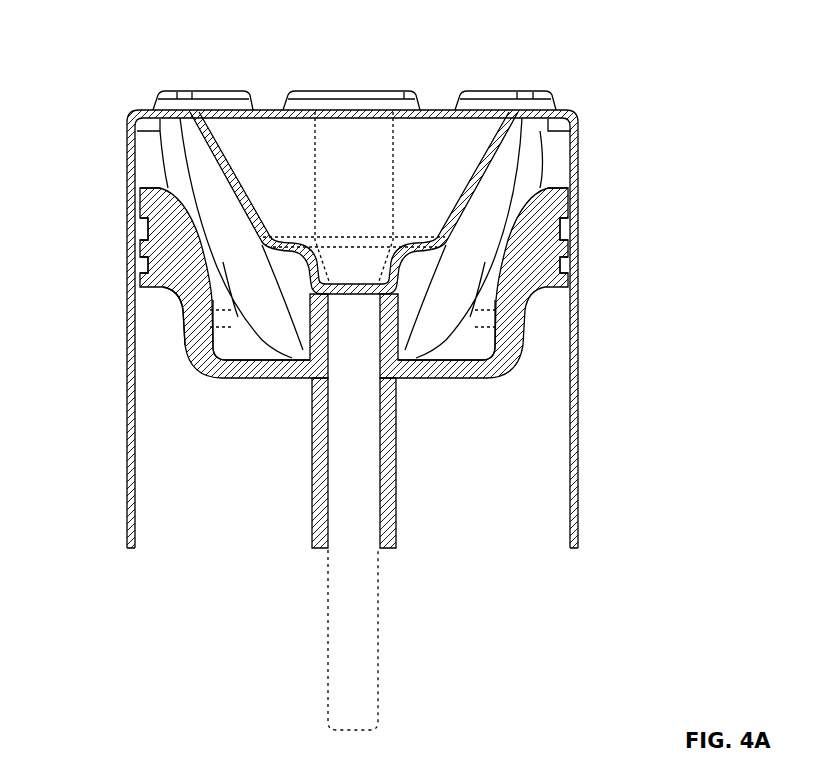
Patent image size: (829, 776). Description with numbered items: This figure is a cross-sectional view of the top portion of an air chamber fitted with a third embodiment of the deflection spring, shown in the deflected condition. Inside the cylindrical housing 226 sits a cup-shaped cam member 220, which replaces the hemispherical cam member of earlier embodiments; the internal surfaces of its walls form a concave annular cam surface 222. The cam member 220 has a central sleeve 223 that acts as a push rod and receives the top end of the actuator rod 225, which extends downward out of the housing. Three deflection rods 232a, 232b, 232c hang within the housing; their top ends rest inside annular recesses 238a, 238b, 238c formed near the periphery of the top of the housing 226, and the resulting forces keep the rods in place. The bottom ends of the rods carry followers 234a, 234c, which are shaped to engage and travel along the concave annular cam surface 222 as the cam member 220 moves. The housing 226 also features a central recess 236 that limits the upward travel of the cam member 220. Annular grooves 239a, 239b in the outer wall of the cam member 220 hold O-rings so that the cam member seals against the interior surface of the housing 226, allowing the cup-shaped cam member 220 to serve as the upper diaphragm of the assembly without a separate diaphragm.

The cup-shaped cam member 220 is at (523, 336).
The concave annular cam surface 222 is at (207, 283).
The central sleeve 223 is at (400, 505).
The actuator rod 225 is at (380, 698).
The housing 226 is at (580, 142).
The deflection rod 232a is at (178, 160).
The deflection rod 232b is at (362, 140).
The deflection rod 232c is at (533, 162).
The follower 234a is at (278, 333).
The follower 234c is at (432, 325).
The central recess 236 is at (158, 118).
The annular recess 238a is at (200, 92).
The annular recess 238b is at (350, 92).
The annular recess 238c is at (504, 91).
The annular groove 239a is at (133, 248).
The annular groove 239b is at (573, 250).